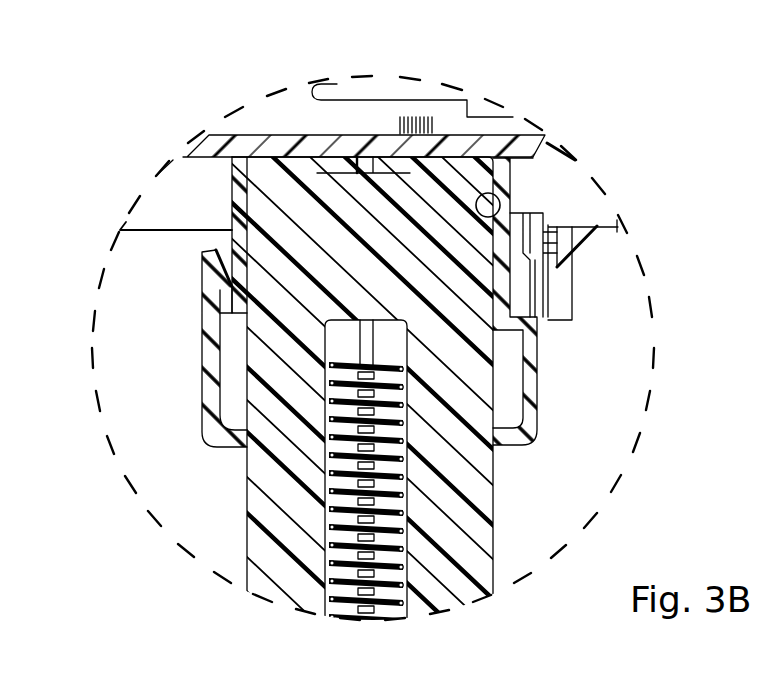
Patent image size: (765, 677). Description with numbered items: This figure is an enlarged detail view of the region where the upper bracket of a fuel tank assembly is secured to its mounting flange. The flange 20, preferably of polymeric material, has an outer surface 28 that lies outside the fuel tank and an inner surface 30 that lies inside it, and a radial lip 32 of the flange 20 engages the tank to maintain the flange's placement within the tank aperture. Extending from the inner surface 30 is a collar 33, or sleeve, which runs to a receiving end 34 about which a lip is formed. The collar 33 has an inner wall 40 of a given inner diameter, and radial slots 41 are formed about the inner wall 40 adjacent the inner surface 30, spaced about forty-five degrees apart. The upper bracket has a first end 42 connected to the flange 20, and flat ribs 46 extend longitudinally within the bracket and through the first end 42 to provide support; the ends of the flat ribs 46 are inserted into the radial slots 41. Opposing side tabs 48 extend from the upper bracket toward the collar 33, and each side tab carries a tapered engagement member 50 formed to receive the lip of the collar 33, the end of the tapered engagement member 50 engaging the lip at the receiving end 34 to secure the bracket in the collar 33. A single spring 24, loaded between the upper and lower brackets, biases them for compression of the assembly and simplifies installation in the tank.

The flange 20 is at (259, 148).
The outer surface 28 is at (307, 135).
The radial slots 41 is at (370, 171).
The radial lip 32 is at (537, 132).
The inner surface 30 is at (537, 163).
The inner wall 40 is at (493, 192).
The tapered engagement member 50 is at (517, 291).
The side tabs 48 is at (550, 319).
The first end 42 is at (495, 348).
The receiving end 34 is at (240, 313).
The collar 33 is at (237, 202).
The flat rib 46 is at (307, 248).
The spring 24 is at (340, 458).